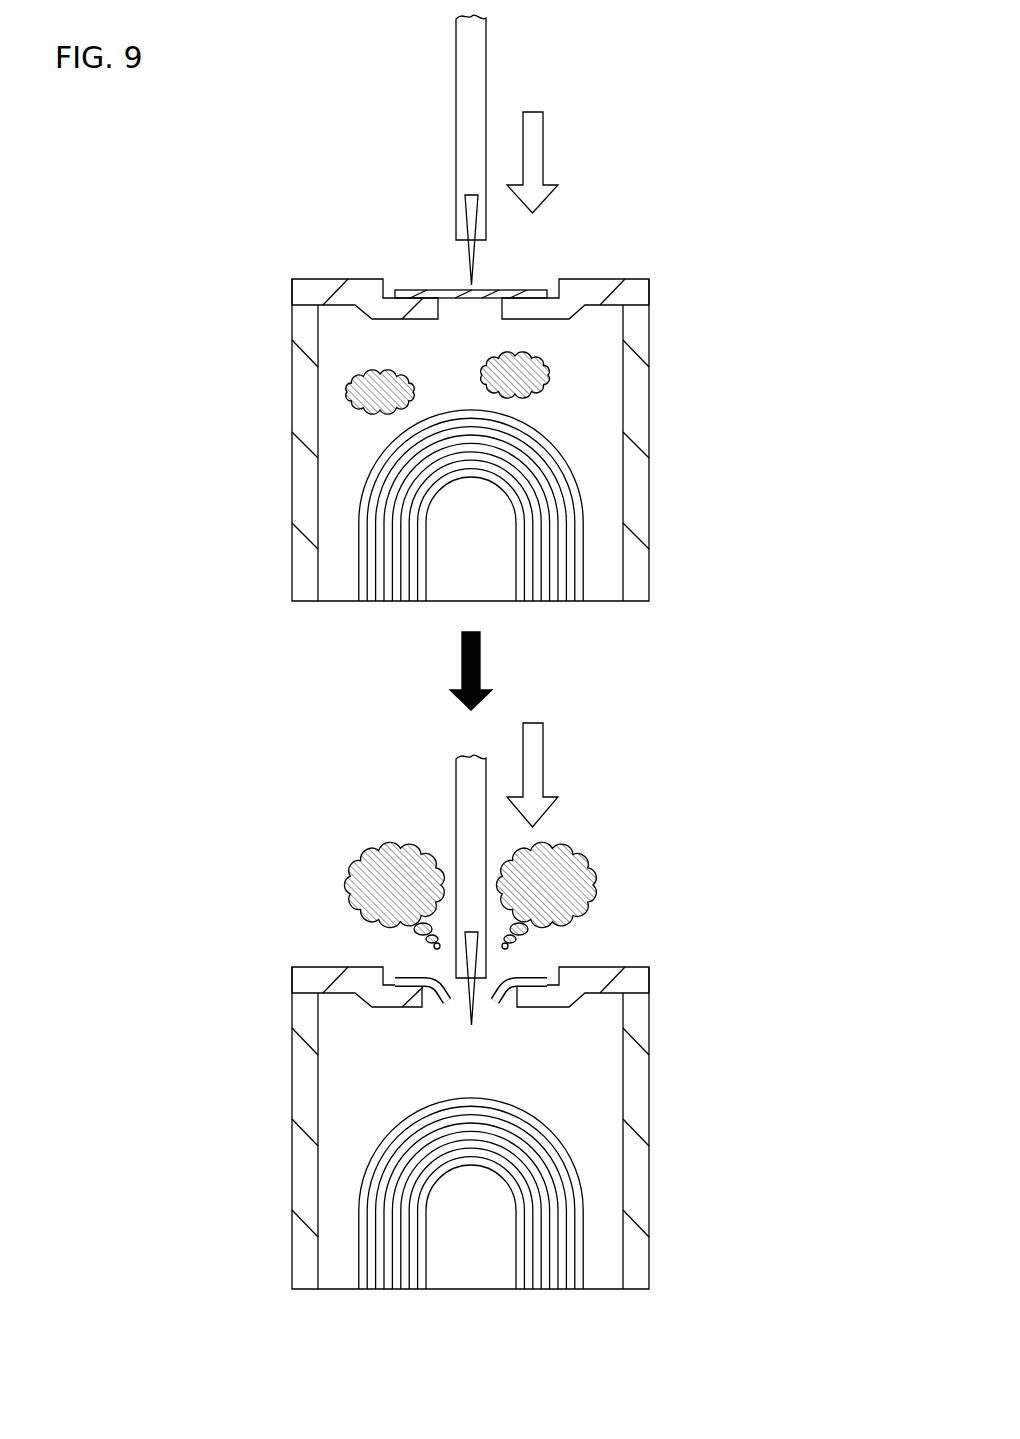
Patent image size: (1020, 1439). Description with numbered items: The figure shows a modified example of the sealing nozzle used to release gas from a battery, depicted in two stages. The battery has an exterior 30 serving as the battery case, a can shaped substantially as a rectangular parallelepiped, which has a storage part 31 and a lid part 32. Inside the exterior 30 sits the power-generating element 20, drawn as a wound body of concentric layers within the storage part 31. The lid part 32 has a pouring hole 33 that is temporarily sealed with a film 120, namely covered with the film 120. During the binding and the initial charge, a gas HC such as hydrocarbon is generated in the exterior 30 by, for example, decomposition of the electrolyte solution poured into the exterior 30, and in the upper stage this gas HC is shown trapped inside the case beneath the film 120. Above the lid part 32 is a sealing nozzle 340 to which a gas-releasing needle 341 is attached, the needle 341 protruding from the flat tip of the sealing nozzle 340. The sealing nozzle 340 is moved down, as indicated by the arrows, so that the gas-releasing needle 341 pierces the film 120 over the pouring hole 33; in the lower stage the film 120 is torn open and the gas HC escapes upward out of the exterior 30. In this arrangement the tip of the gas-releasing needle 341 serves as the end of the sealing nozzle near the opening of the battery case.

The sealing nozzle 340 is at (349, 537).
The gas-releasing needle 341 is at (463, 273).
The film 120 is at (510, 288).
The lid part 32 is at (466, 655).
The pouring hole 33 is at (502, 306).
The gas HC is at (546, 375).
The power-generating element 20 is at (545, 440).
The exterior 30 is at (413, 784).
The storage part 31 is at (300, 489).